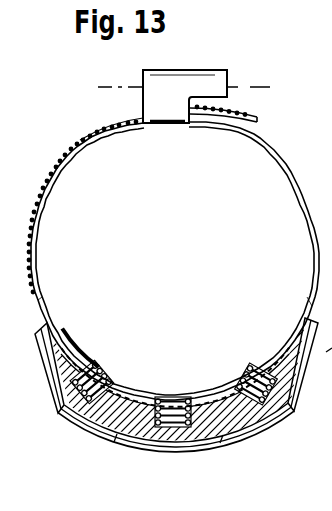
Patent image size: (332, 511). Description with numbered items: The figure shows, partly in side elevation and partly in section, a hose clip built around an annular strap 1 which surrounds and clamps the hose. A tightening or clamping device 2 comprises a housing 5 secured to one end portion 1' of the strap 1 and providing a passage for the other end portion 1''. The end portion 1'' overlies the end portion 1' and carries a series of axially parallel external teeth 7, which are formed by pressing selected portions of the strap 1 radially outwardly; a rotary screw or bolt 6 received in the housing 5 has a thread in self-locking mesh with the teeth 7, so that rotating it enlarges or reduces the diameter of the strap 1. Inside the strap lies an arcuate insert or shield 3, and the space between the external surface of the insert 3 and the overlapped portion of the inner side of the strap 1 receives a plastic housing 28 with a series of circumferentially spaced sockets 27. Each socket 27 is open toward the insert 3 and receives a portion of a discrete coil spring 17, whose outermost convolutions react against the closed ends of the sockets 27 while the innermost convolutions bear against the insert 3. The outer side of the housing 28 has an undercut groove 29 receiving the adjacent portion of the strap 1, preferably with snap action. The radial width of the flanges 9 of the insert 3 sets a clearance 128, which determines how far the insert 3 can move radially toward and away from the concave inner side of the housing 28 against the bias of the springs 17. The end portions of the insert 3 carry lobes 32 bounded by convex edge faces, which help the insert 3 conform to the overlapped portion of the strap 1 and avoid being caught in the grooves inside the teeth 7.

The annular strap 1 is at (175, 261).
The end portion of the strap 1' is at (223, 150).
The other end portion of the strap 1'' is at (107, 154).
The tightening or clamping device 2 is at (117, 106).
The arcuate insert or shield 3 is at (83, 352).
The housing 5 is at (207, 70).
The rotary screw or bolt 6 is at (263, 83).
The external projections or teeth 7 is at (72, 148).
The flanges 9 is at (327, 372).
The coil spring 17 is at (103, 378).
The sockets 27 is at (115, 442).
The plastic housing 28 is at (273, 363).
The undercut groove 29 is at (257, 440).
The lobes 32 is at (42, 297).
The clearance 128 is at (132, 397).